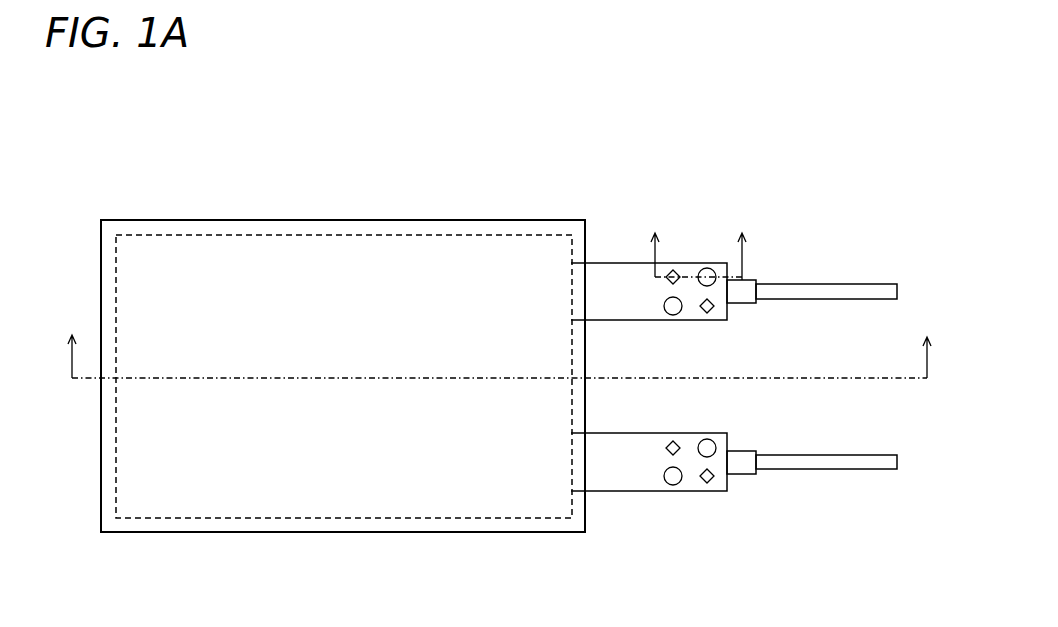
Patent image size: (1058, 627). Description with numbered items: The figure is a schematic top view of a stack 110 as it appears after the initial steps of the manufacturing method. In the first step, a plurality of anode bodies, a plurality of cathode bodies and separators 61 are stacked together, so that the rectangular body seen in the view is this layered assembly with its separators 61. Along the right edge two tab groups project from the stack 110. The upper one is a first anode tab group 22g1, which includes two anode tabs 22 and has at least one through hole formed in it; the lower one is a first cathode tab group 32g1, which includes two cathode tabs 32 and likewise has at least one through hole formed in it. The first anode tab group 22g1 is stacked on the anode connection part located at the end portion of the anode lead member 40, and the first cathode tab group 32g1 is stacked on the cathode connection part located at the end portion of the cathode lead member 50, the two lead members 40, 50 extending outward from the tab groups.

The stack 110 is at (398, 208).
The separator 61 is at (159, 220).
The cathode tab 32 is at (295, 234).
The first cathode tab group 32g1 is at (728, 438).
The anode tab 22 is at (724, 303).
The first anode tab group 22g1 is at (728, 315).
The anode lead member 40 is at (877, 283).
The cathode lead member 50 is at (877, 472).